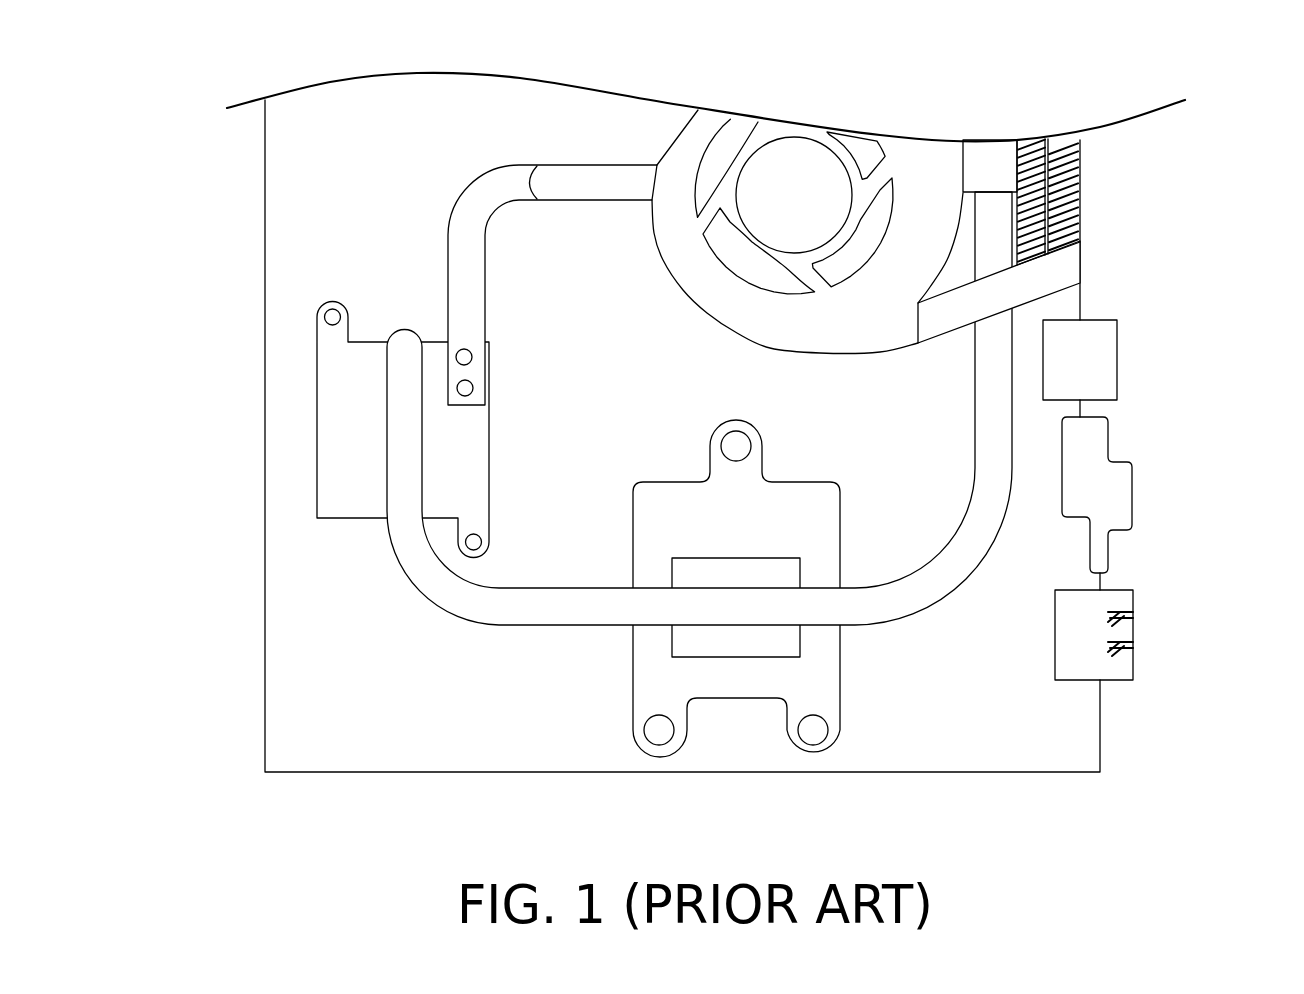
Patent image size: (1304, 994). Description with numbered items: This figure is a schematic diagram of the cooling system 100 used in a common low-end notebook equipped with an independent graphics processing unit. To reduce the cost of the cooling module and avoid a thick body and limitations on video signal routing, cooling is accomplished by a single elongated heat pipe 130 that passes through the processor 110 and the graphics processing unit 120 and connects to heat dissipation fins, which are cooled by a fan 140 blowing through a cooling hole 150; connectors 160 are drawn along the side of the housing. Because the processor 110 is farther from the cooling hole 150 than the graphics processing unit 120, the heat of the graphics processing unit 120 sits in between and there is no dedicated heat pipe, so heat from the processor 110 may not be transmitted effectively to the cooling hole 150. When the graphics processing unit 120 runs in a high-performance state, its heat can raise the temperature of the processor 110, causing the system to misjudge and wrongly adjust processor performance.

The heat dissipation system (prior art) 100 is at (118, 45).
The processor 110 is at (337, 430).
The graphics processing unit 120 is at (737, 683).
The heat pipe 130 is at (560, 612).
The fan 140 is at (803, 152).
The cooling hole 150 is at (1082, 187).
The connectors / ports 160 is at (1108, 361).